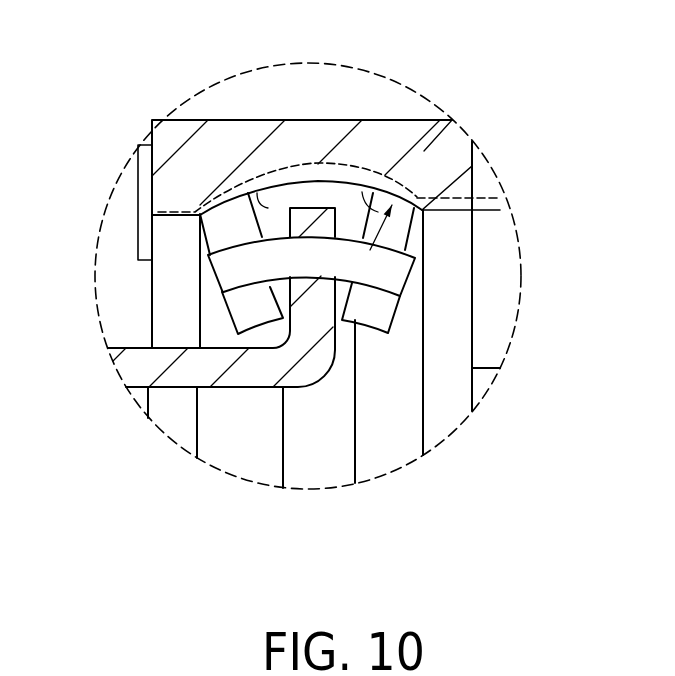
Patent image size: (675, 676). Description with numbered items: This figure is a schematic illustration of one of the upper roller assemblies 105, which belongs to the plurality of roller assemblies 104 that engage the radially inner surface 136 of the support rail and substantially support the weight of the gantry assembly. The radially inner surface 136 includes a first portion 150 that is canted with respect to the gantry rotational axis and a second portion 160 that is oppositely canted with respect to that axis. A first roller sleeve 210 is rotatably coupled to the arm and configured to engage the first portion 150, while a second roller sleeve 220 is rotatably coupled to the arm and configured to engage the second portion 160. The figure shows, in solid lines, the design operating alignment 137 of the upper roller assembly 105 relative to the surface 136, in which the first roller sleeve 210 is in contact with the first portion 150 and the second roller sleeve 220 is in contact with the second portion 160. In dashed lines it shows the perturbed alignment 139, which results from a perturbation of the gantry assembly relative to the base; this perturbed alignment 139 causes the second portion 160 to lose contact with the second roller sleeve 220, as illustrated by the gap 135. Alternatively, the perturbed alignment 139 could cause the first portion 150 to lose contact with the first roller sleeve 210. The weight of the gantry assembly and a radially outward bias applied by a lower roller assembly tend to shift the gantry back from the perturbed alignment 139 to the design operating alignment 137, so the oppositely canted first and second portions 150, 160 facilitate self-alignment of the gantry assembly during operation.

The plurality of roller assemblies 104 is at (231, 371).
The upper roller assembly 105 is at (272, 340).
The gap 135 is at (409, 177).
The radially inner surface 136 is at (151, 175).
The design operating alignment 137 is at (485, 223).
The perturbed alignment 139 is at (460, 192).
The first portion 150 is at (252, 191).
The second portion 160 is at (433, 195).
The first roller sleeve 210 is at (255, 315).
The second roller sleeve 220 is at (380, 313).